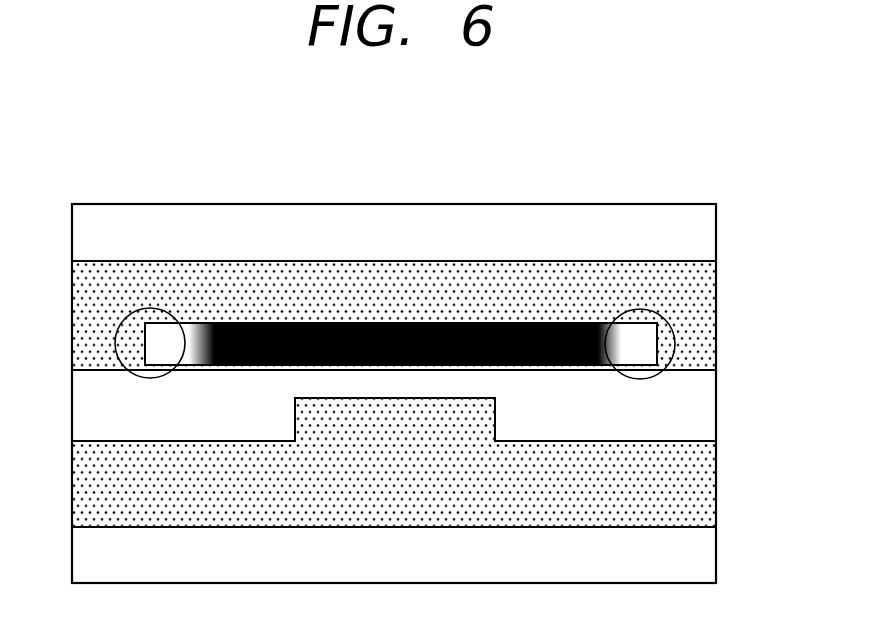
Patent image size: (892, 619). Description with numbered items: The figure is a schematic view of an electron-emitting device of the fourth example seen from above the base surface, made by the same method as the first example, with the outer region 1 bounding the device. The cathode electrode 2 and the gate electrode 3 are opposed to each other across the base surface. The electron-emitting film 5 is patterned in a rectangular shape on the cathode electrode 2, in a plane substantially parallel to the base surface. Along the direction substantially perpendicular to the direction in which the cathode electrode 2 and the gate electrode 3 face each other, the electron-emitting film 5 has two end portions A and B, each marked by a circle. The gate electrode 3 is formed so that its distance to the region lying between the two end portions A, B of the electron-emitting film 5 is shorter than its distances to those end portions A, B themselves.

The first substrate 1 is at (705, 232).
The cathode electrode 2 is at (706, 305).
The gate electrode 3 is at (705, 483).
The electron-emitting film 5 is at (330, 323).
The end portion A is at (148, 308).
The end portion B is at (637, 310).